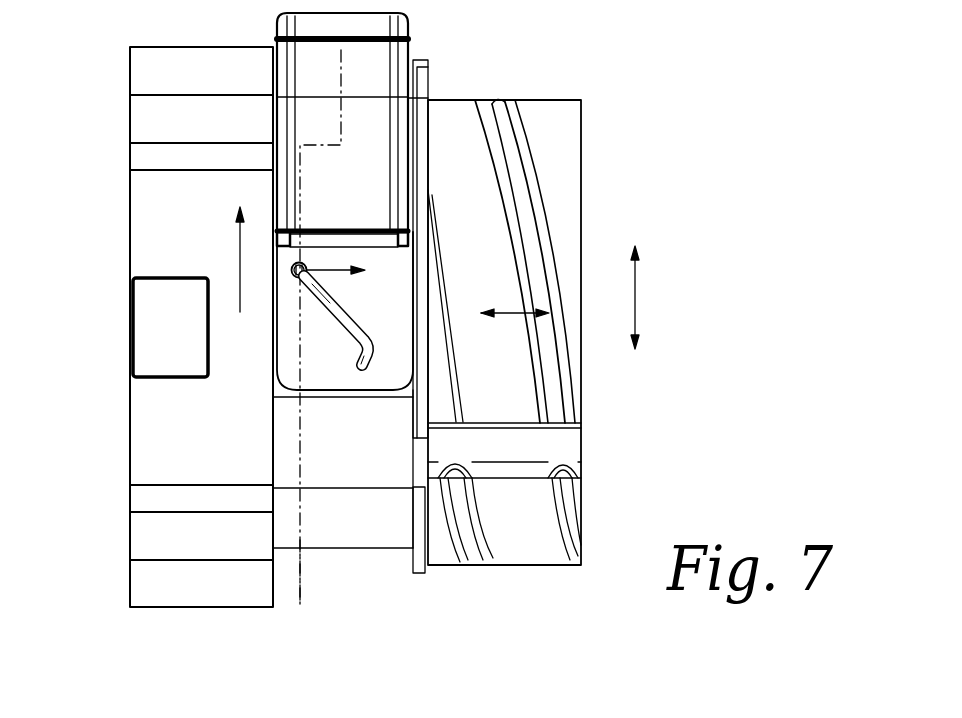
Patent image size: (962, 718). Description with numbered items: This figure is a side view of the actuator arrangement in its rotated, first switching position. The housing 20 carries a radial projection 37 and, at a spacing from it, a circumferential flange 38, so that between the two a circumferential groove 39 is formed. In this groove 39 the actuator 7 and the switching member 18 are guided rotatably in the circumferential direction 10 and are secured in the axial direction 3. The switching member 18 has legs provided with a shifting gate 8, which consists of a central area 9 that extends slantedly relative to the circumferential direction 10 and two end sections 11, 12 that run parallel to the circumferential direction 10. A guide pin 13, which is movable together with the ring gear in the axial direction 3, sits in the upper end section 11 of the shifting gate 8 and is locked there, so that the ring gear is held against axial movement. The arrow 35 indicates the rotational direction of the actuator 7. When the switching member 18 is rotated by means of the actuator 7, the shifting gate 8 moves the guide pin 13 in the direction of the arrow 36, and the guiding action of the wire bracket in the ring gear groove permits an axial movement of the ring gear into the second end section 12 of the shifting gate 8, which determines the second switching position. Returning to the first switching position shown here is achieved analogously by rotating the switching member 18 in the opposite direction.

The axial direction 3 is at (510, 312).
The actuator 7 is at (383, 25).
The shifting gate 8 is at (328, 311).
The central area 9 is at (322, 323).
The circumferential direction 10 is at (640, 286).
The end section 11 is at (294, 280).
The end section 12 is at (360, 370).
The guide pin 13 is at (305, 262).
The switching member 18 is at (287, 347).
The housing 20 is at (163, 433).
The arrow 35 is at (240, 262).
The arrow 36 is at (338, 262).
The radial projection 37 is at (275, 593).
The circumferential flange 38 is at (413, 568).
The circumferential groove 39 is at (359, 589).